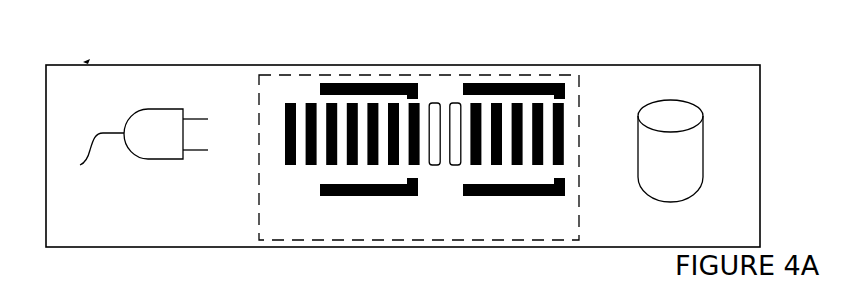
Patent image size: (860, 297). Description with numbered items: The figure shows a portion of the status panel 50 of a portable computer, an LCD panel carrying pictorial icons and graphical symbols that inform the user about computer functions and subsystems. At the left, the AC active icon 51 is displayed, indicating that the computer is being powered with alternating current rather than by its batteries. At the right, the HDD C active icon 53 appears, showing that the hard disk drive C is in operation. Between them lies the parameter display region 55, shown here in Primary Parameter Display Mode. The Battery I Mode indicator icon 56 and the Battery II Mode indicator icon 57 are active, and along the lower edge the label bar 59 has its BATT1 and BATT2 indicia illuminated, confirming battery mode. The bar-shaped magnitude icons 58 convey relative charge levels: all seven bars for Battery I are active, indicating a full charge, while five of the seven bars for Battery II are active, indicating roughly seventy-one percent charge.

The status panel 50 is at (97, 240).
The AC active icon 51 is at (132, 105).
The HDD C active icon 53 is at (713, 145).
The parameter display region 55 is at (270, 81).
The Battery I Mode indicator icon 56 is at (347, 77).
The Battery II Mode indicator icon 57 is at (495, 78).
The magnitude icons 58 is at (395, 170).
The label bar 59 is at (308, 224).